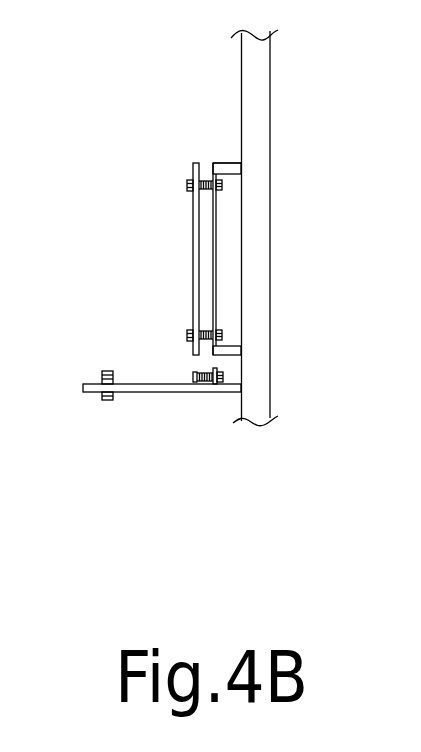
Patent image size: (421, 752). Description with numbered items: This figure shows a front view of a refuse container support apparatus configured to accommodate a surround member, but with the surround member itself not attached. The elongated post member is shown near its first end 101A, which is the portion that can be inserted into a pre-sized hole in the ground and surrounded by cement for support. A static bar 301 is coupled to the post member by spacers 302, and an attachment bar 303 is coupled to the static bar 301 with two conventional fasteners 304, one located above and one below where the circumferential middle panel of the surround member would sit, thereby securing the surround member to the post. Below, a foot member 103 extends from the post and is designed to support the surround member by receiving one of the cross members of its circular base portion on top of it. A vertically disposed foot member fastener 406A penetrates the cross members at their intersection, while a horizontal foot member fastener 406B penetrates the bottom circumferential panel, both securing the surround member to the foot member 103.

The first end 101A is at (258, 406).
The foot member 103 is at (135, 392).
The static bar 301 is at (215, 163).
The spacers 302 is at (235, 170).
The attachment bar 303 is at (193, 247).
The conventional fasteners 304 is at (190, 185).
The foot member fastener 406A is at (107, 371).
The foot member fastener 406B is at (208, 386).